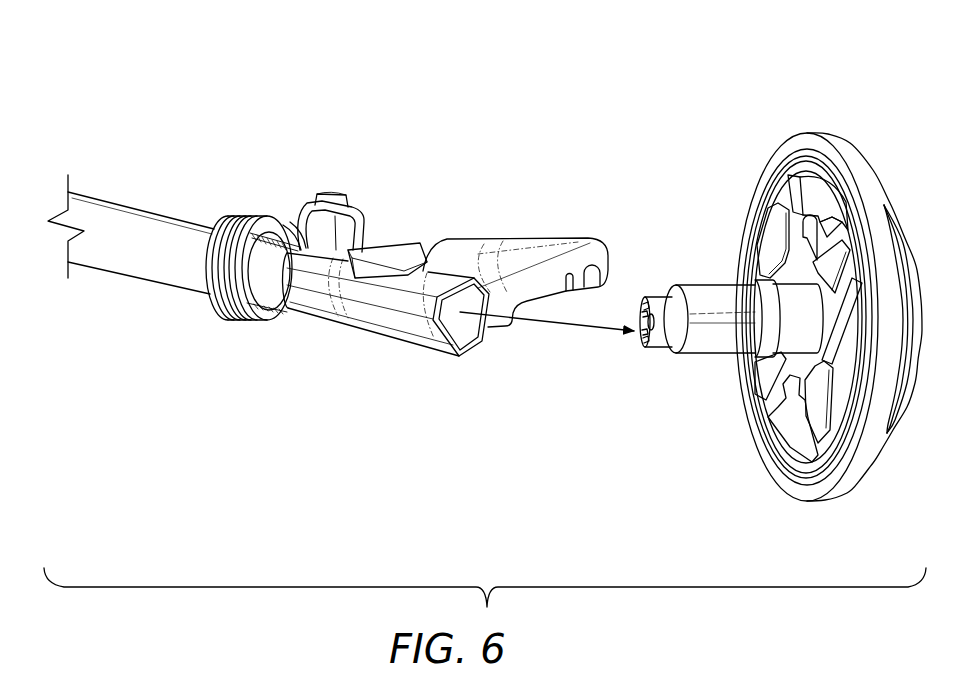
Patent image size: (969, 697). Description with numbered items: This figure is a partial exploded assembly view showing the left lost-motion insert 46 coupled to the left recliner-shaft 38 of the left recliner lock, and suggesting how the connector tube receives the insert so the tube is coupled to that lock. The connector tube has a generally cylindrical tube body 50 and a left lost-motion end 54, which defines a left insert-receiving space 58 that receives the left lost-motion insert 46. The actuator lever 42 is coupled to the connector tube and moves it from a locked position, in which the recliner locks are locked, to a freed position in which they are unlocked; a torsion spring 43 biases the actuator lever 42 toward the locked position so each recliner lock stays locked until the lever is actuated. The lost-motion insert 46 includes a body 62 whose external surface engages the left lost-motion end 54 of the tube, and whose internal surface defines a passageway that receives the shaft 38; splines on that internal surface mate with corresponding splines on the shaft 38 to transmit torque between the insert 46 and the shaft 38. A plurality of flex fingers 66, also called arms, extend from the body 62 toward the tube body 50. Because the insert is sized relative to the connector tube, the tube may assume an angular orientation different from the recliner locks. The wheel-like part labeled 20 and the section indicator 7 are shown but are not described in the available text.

The wheel 20 is at (817, 119).
The left recliner-shaft 38 is at (707, 332).
The actuator lever 42 is at (485, 232).
The torsion spring 43 is at (263, 213).
The left lost-motion insert 46 is at (678, 272).
The tube body 50 is at (147, 200).
The left lost-motion end 54 is at (381, 359).
The left insert-receiving space 58 is at (466, 330).
The body 62 is at (708, 279).
The flex fingers 66 is at (640, 292).
The section line 7 is at (830, 133).